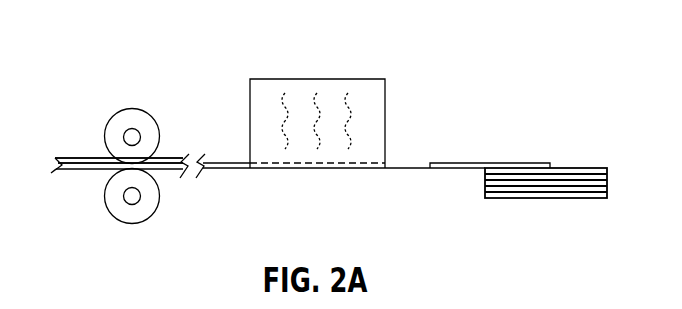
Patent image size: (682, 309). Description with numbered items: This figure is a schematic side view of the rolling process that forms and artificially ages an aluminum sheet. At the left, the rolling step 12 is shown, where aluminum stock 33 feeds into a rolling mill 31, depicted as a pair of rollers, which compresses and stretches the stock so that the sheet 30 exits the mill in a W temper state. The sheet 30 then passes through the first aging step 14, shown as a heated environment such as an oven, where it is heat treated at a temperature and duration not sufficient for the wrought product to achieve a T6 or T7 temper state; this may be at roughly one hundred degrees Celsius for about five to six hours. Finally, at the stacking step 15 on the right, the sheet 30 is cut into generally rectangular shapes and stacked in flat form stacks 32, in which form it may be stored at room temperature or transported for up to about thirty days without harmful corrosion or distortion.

The rolling step 12 is at (62, 68).
The first aging step 14 is at (247, 68).
The stacking step 15 is at (457, 68).
The sheet 30 is at (168, 162).
The rolling mill 31 is at (103, 193).
The stacks 32 is at (583, 168).
The aluminum stock 33 is at (82, 158).